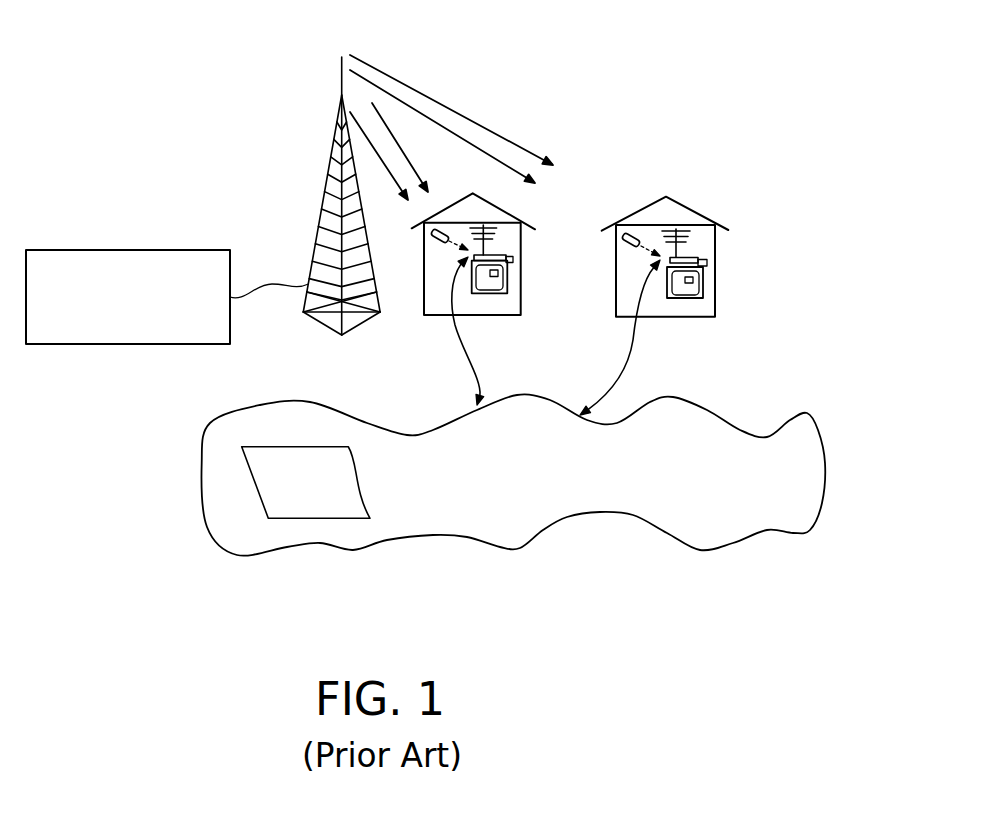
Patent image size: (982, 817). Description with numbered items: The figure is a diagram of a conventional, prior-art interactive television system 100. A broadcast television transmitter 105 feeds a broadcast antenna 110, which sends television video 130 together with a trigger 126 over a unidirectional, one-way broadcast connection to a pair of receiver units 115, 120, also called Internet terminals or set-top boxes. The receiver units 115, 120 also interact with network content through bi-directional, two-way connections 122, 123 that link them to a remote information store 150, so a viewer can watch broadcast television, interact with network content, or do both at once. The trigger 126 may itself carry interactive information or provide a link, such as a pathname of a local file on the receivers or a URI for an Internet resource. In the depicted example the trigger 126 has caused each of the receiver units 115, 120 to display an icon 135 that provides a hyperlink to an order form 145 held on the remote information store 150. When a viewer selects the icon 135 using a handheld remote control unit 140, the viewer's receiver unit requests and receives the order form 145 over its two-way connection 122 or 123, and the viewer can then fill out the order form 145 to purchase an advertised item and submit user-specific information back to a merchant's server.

The interactive television system 100 is at (765, 90).
The broadcast television transmitter 105 is at (107, 324).
The broadcast antenna 110 is at (342, 94).
The receiver unit 115 is at (500, 252).
The receiver unit 120 is at (698, 262).
The bi-directional connection 122 is at (468, 355).
The bi-directional connection 123 is at (630, 371).
The trigger 126 is at (395, 180).
The television video 130 is at (390, 131).
The icon 135 is at (496, 274).
The handheld remote control unit 140 is at (432, 236).
The order form 145 is at (380, 488).
The remote information store 150 is at (581, 494).